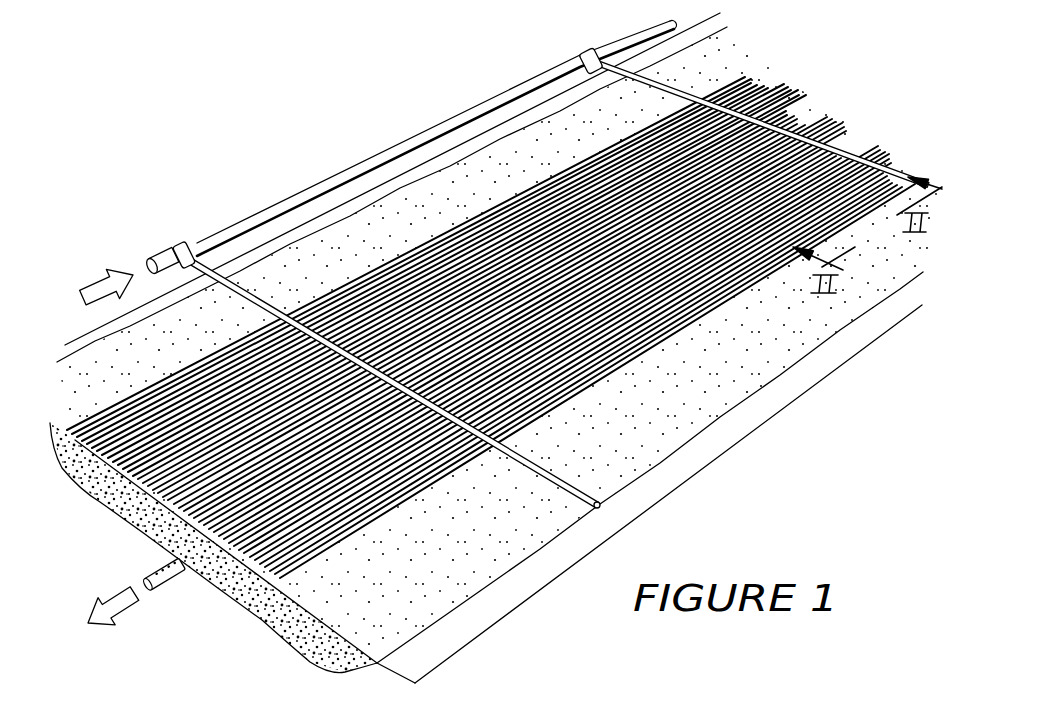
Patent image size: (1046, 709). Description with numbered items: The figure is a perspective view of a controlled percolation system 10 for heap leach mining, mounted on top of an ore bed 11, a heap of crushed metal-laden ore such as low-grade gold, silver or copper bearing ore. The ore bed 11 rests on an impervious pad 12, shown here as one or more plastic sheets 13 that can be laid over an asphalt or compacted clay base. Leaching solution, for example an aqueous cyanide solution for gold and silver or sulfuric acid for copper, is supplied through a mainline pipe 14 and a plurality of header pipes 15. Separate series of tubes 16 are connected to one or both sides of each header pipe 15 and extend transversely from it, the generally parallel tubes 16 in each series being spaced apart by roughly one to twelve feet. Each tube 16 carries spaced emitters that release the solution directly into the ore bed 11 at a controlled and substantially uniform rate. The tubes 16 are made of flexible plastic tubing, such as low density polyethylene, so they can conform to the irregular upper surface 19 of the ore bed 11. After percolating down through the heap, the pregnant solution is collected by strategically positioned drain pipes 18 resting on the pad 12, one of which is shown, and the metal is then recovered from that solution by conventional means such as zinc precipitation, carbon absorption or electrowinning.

The controlled percolation system 10 is at (523, 354).
The ore bed 11 is at (523, 354).
The pad 12 is at (128, 552).
The plastic sheets 13 is at (667, 477).
The mainline pipe 14 is at (230, 228).
The header pipes 15 is at (668, 79).
The tubes 16 is at (742, 292).
The drain pipes 18 is at (170, 583).
The upper surface 19 is at (567, 117).